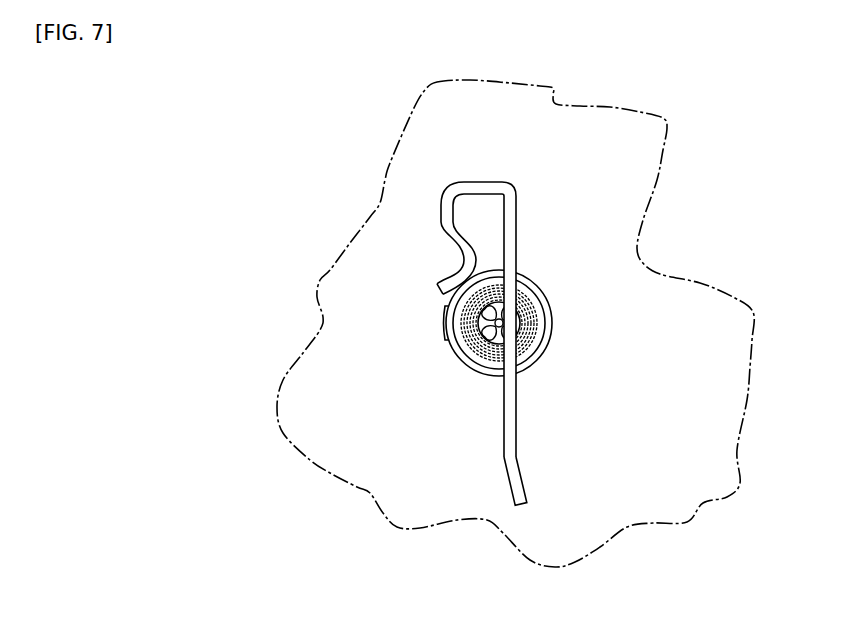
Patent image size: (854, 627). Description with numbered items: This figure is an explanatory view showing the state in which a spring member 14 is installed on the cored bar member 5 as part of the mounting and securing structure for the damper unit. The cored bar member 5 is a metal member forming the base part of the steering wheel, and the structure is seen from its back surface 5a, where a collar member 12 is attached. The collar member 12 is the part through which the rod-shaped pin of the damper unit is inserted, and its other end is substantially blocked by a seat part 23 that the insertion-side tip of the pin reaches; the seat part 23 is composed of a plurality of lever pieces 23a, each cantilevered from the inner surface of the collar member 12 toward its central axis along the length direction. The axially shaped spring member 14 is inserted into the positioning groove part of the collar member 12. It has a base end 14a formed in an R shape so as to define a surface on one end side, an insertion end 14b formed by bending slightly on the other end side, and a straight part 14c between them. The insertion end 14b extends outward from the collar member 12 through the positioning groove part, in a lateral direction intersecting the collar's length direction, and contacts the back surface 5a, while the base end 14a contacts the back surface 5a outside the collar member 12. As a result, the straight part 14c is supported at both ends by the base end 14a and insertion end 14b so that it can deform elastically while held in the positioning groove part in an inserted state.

The cored bar member 5 is at (642, 245).
The back surface 5a is at (694, 444).
The collar member 12 is at (447, 348).
The spring member 14 is at (534, 316).
The base end 14a is at (460, 180).
The insertion end 14b is at (523, 487).
The straight part 14c is at (517, 407).
The seat part 23 is at (535, 301).
The lever pieces 23a is at (512, 326).